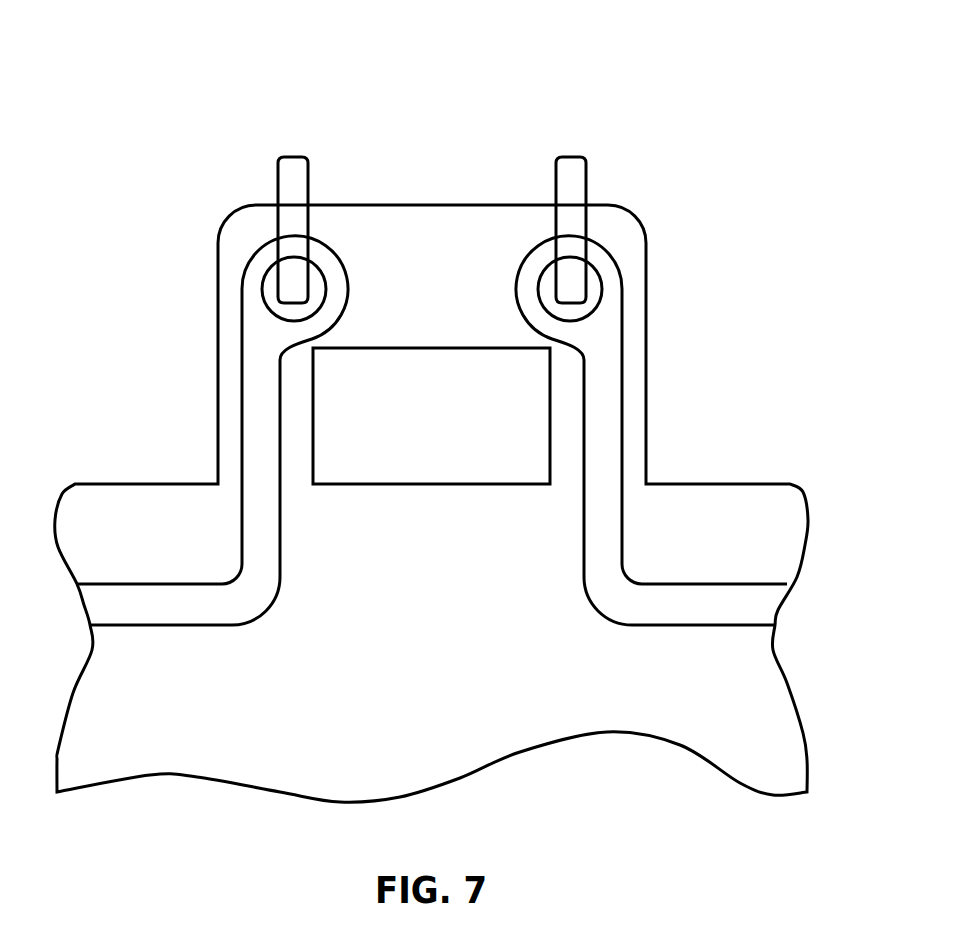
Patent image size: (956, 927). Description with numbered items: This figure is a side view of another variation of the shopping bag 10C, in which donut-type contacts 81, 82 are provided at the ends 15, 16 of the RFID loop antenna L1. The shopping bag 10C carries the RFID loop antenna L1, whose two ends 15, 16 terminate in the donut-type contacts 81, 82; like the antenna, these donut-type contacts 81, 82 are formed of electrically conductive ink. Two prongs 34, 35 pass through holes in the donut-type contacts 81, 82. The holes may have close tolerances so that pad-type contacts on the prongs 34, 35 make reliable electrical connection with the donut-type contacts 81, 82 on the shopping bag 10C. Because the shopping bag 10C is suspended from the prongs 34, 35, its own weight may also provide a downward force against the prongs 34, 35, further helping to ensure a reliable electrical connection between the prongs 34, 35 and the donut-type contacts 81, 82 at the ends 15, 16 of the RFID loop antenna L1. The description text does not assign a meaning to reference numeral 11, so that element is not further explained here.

The shopping bag 10C is at (512, 72).
The case 11 is at (421, 205).
The end of the RFID loop antenna 15 is at (251, 237).
The end of the RFID loop antenna 16 is at (622, 246).
The prong 34 is at (295, 155).
The prong 35 is at (570, 155).
The donut-type contact 81 is at (335, 243).
The donut-type contact 82 is at (600, 238).
The RFID loop antenna L1 is at (258, 440).